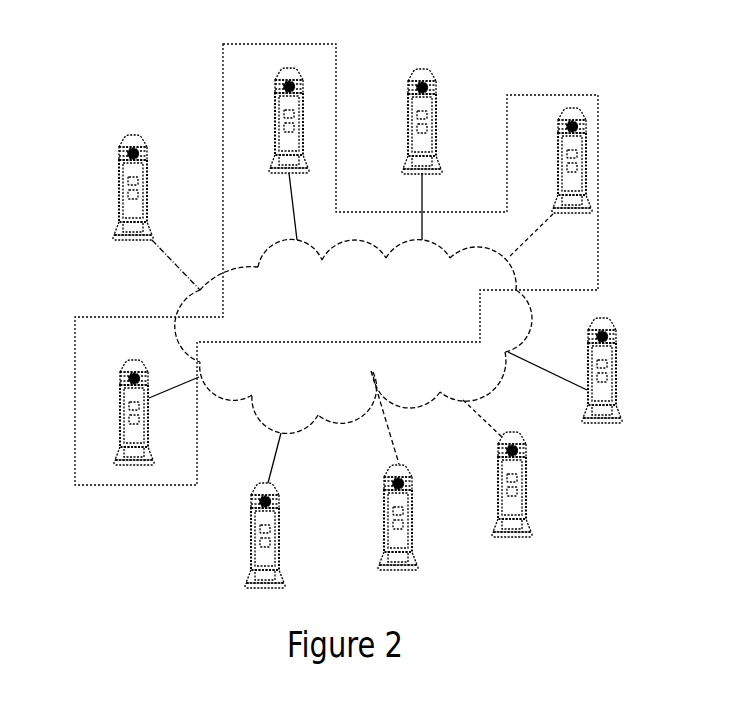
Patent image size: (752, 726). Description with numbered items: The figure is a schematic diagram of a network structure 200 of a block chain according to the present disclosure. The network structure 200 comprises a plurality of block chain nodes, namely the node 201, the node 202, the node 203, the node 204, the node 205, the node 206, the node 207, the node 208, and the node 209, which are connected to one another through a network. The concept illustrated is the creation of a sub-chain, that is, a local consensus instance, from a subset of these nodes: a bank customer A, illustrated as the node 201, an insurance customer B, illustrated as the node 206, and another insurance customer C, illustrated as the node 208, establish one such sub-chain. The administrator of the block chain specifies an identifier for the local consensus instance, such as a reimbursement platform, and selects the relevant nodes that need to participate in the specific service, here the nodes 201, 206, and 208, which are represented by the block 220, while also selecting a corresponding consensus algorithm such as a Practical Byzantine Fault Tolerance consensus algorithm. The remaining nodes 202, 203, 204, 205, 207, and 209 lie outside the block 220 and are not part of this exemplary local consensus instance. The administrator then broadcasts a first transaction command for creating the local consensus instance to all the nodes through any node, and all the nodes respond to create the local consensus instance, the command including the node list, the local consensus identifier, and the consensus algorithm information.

The network structure 200 is at (535, 61).
The node 201 is at (557, 139).
The node 202 is at (585, 351).
The node 203 is at (497, 460).
The node 204 is at (383, 495).
The node 205 is at (248, 511).
The node 206 is at (119, 389).
The node 207 is at (117, 162).
The node 208 is at (273, 100).
The node 209 is at (407, 100).
The block 220 is at (337, 210).